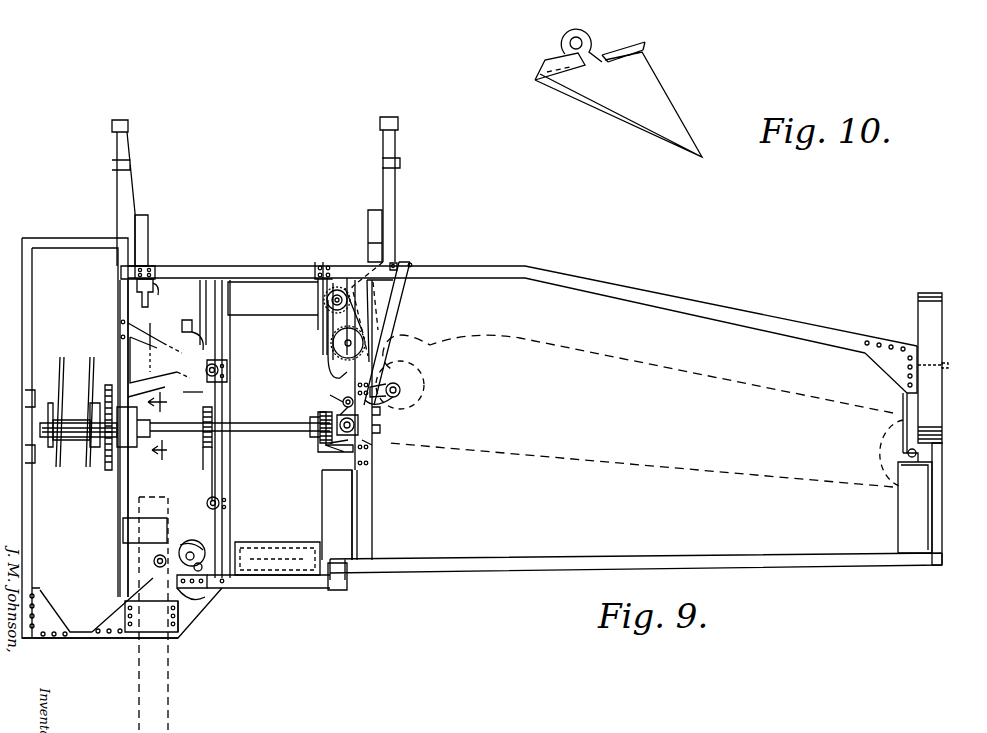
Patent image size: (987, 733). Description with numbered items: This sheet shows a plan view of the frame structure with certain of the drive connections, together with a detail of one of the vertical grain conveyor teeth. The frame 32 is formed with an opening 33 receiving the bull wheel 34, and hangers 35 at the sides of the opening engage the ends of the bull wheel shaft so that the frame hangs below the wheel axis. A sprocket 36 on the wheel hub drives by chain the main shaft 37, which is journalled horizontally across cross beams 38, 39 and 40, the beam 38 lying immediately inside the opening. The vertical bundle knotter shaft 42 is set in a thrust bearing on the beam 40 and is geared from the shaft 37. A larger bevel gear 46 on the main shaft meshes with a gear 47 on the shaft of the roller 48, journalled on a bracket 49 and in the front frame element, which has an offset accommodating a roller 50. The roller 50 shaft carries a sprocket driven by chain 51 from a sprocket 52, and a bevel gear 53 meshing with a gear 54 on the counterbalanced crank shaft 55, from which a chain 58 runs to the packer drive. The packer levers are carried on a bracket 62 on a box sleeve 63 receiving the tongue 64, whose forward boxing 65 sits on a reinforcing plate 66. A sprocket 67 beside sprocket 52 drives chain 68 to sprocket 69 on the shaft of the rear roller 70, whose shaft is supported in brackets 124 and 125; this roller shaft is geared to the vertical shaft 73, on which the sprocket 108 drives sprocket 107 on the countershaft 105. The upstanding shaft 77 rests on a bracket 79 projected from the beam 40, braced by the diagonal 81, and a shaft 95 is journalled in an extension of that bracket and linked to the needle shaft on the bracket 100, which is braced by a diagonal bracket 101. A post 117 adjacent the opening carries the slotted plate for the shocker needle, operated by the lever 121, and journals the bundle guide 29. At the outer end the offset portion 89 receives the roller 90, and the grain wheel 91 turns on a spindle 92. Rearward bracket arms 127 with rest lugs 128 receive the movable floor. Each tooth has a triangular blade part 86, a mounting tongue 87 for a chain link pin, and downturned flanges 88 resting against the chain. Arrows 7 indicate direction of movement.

In FIG. 9, the direction arrows 7 is at (160, 431).
In FIG. 9, the bundle guide 29 is at (480, 340).
In FIG. 9, the frame 32 is at (500, 570).
In FIG. 9, the opening 33 is at (43, 535).
In FIG. 9, the bull wheel 34 is at (83, 445).
In FIG. 9, the hangers 35 is at (128, 392).
In FIG. 9, the sprocket 36 is at (103, 383).
In FIG. 9, the main shaft 37 is at (263, 431).
In FIG. 9, the cross beam 38 is at (128, 492).
In FIG. 9, the cross beam 39 is at (227, 527).
In FIG. 9, the cross beam 40 is at (371, 504).
In FIG. 9, the bundle knotter shaft 42 is at (368, 445).
In FIG. 9, the bevel gear 46 is at (313, 413).
In FIG. 9, the bevel gear 47 is at (323, 448).
In FIG. 9, the roller 48 is at (352, 512).
In FIG. 9, the bracket 49 is at (335, 452).
In FIG. 9, the roller 50 is at (288, 543).
In FIG. 9, the chain 51 is at (212, 470).
In FIG. 9, the sprocket 52 is at (213, 410).
In FIG. 9, the bevel gear 53 is at (216, 503).
In FIG. 9, the gear 54 is at (205, 600).
In FIG. 9, the counterbalanced crank shaft 55 is at (192, 541).
In FIG. 9, the chain 58 is at (200, 548).
In FIG. 9, the bracket 62 is at (152, 563).
In FIG. 9, the box sleeve 63 is at (140, 530).
In FIG. 9, the tongue 64 is at (168, 700).
In FIG. 9, the forward boxing 65 is at (148, 625).
In FIG. 9, the reinforcing plate 66 is at (185, 617).
In FIG. 9, the sprocket 67 is at (203, 413).
In FIG. 9, the chain 68 is at (203, 395).
In FIG. 9, the sprocket 69 is at (207, 300).
In FIG. 9, the roller 70 is at (247, 287).
In FIG. 9, the vertical shaft 73 is at (338, 290).
In FIG. 9, the upstanding shaft 77 is at (443, 395).
In FIG. 9, the bracket 79 is at (407, 400).
In FIG. 9, the diagonal 81 is at (408, 285).
In FIG. 10, the triangular blade part 86 is at (648, 103).
In FIG. 10, the mounting tongue 87 is at (592, 45).
In FIG. 10, the downturned flanges 88 is at (638, 40).
In FIG. 9, the offset portion 89 is at (942, 505).
In FIG. 9, the roller 90 is at (920, 520).
In FIG. 9, the grain wheel 91 is at (925, 310).
In FIG. 9, the spindle 92 is at (947, 365).
In FIG. 9, the shaft 95 is at (340, 400).
In FIG. 9, the bracket 100 is at (225, 368).
In FIG. 9, the diagonal bracket 101 is at (152, 347).
In FIG. 9, the countershaft 105 is at (333, 338).
In FIG. 9, the sprocket 107 is at (320, 373).
In FIG. 9, the sprocket 108 is at (327, 318).
In FIG. 9, the post 117 is at (125, 272).
In FIG. 9, the lever 121 is at (161, 296).
In FIG. 9, the bracket 124 is at (190, 260).
In FIG. 9, the bracket 125 is at (320, 263).
In FIG. 9, the bracket arms 127 is at (124, 187).
In FIG. 9, the rest lugs 128 is at (148, 232).